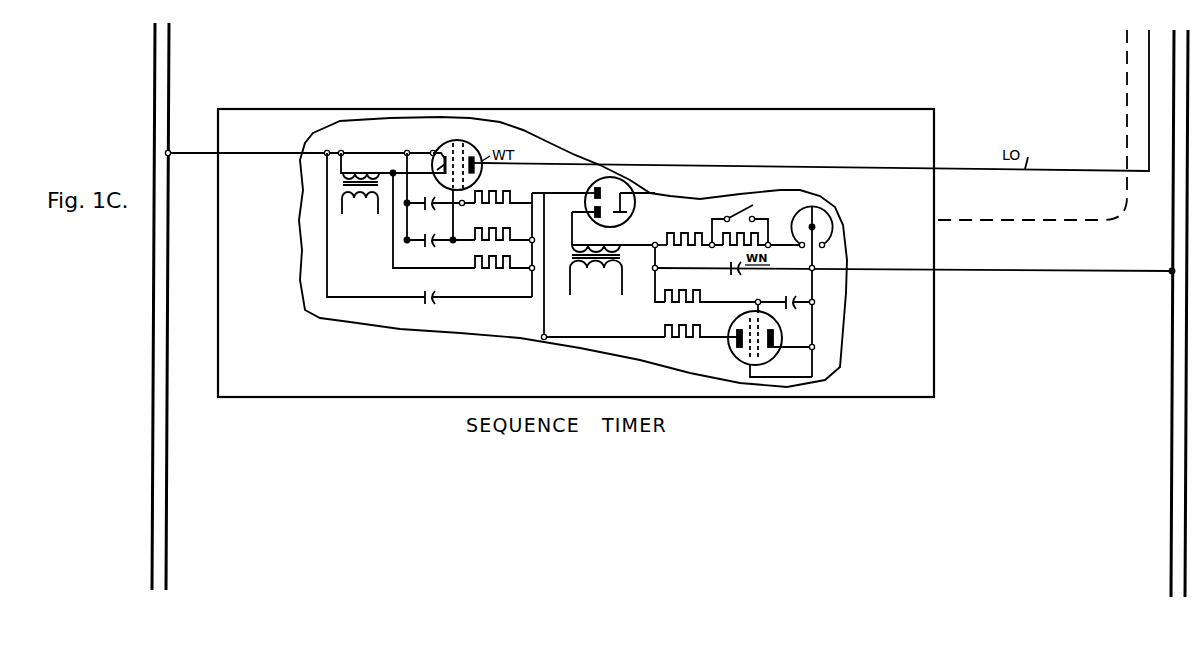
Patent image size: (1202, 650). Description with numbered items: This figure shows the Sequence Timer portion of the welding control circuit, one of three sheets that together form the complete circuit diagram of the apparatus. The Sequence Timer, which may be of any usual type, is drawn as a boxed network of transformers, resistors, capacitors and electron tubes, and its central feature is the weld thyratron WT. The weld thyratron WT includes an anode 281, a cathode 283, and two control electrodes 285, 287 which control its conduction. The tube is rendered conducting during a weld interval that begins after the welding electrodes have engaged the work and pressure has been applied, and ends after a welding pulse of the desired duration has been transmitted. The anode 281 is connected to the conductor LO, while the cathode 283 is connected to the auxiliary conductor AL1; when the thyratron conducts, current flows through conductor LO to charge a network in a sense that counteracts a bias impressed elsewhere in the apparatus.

The anode 281 is at (478, 170).
The cathode 283 is at (442, 148).
The control electrode 285 is at (459, 181).
The control electrode 287 is at (471, 147).